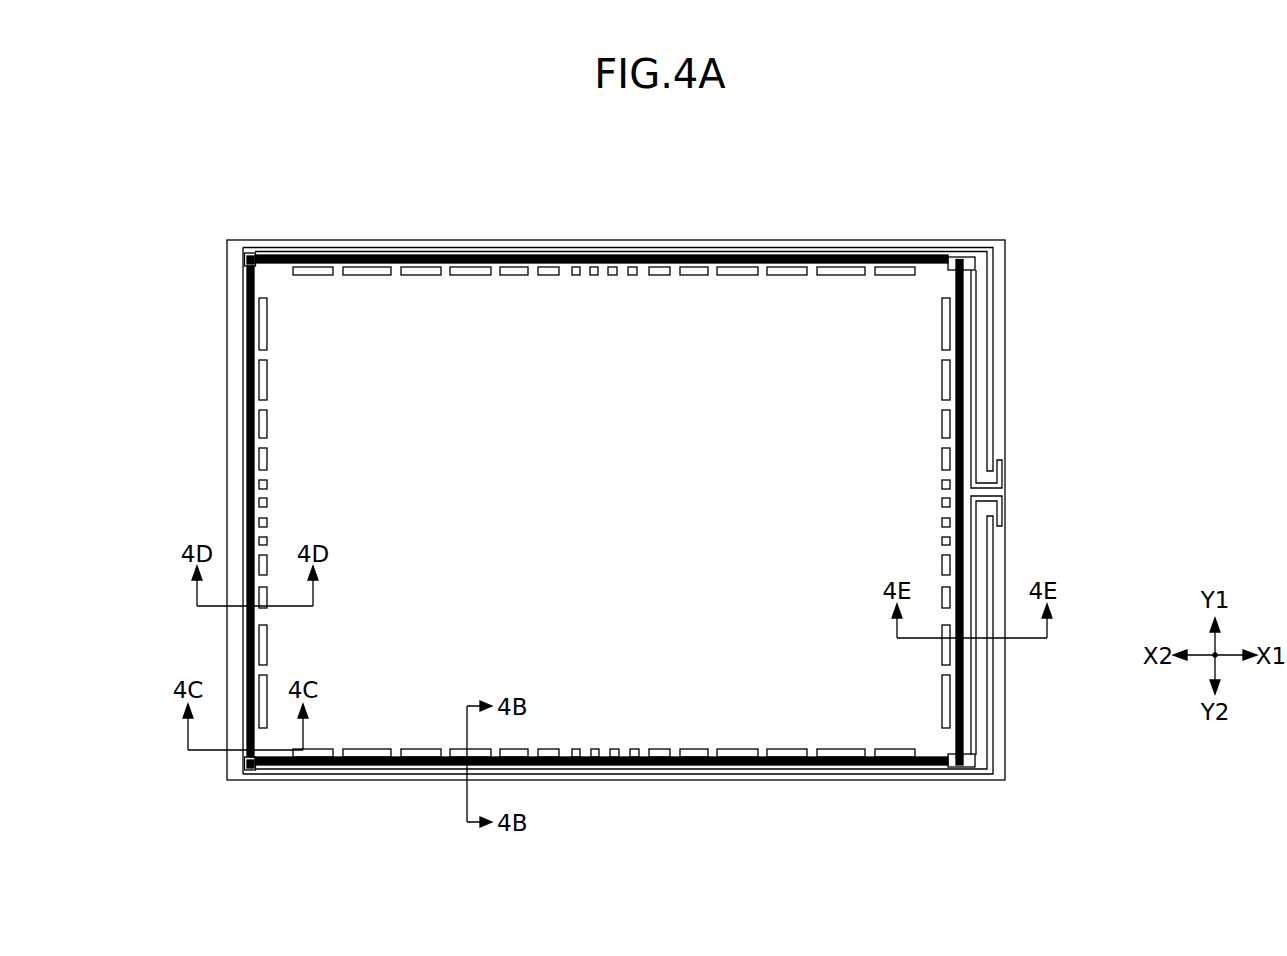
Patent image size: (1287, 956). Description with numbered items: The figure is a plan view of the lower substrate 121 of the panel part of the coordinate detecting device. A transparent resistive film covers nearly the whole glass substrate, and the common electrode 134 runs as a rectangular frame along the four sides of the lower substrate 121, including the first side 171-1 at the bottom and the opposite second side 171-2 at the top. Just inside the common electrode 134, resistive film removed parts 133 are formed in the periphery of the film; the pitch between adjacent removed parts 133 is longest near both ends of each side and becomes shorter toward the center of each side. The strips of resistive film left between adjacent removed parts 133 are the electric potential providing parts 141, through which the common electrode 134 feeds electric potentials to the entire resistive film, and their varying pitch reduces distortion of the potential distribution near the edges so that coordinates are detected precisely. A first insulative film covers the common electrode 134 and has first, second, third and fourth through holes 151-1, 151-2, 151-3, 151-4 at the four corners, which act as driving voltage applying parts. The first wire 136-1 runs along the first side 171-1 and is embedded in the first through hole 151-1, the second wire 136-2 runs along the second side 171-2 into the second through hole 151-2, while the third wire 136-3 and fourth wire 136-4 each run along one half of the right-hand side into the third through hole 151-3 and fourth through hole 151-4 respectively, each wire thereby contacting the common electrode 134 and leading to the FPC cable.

The lower substrate 121 is at (243, 240).
The resistive film removed parts 133 is at (268, 458).
The common electrode 134 is at (832, 258).
The electric potential providing parts 141 is at (392, 277).
The first through hole 151-1 is at (245, 768).
The second through hole 151-2 is at (245, 262).
The third through hole 151-3 is at (975, 263).
The fourth through hole 151-4 is at (975, 761).
The first side 171-1 is at (682, 782).
The second side 171-2 is at (500, 243).
The first wire 136-1 is at (892, 773).
The second wire 136-2 is at (662, 246).
The third wire 136-3 is at (985, 460).
The fourth wire 136-4 is at (985, 536).